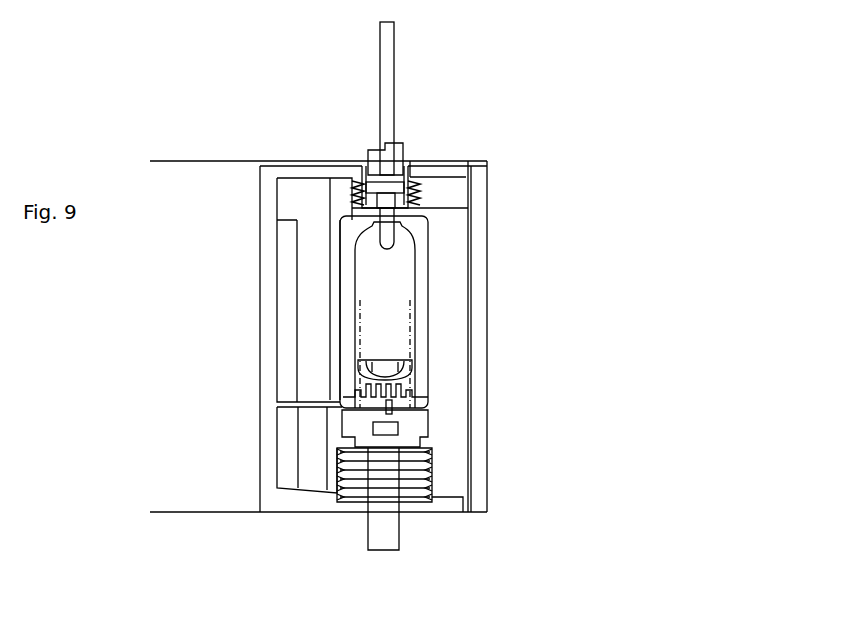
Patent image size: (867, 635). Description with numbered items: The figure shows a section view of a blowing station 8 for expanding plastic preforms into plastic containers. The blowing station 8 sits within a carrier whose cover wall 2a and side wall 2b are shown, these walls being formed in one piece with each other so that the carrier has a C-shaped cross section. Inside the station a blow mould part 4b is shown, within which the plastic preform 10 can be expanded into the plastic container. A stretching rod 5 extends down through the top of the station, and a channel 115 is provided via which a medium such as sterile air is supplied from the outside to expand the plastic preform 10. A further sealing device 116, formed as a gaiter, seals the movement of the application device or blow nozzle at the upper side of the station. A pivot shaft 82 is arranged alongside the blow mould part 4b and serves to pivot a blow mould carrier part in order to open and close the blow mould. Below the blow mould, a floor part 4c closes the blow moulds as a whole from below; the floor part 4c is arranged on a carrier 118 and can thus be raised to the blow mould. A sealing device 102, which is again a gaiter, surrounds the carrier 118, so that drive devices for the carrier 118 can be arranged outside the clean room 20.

The cover wall 2a is at (303, 170).
The side wall 2b is at (260, 303).
The stretching rod 5 is at (387, 88).
The blowing station 8 is at (248, 372).
The plastic preform 10 is at (387, 237).
The clean room 20 is at (460, 303).
The blow mould part 4b is at (407, 310).
The floor part 4c is at (410, 382).
The pivot shaft 82 is at (312, 200).
The sealing device 102 is at (405, 462).
The channel 115 is at (380, 157).
The further sealing device 116 is at (413, 188).
The carrier 118 is at (387, 533).